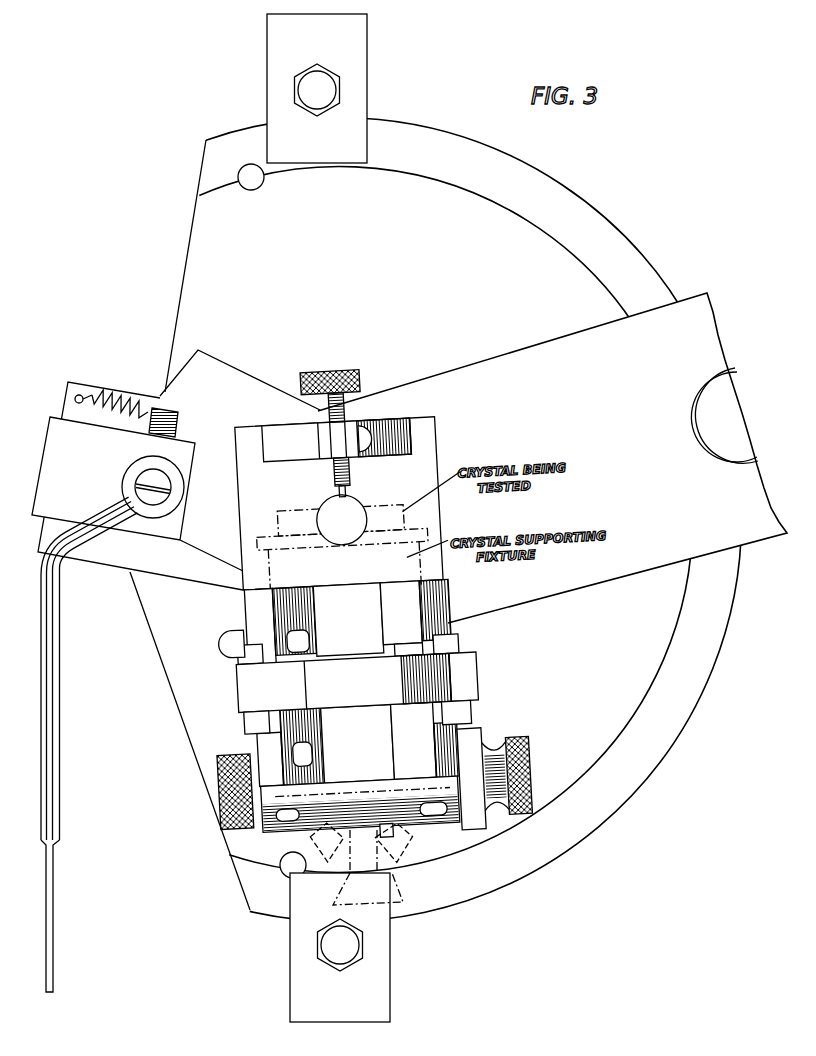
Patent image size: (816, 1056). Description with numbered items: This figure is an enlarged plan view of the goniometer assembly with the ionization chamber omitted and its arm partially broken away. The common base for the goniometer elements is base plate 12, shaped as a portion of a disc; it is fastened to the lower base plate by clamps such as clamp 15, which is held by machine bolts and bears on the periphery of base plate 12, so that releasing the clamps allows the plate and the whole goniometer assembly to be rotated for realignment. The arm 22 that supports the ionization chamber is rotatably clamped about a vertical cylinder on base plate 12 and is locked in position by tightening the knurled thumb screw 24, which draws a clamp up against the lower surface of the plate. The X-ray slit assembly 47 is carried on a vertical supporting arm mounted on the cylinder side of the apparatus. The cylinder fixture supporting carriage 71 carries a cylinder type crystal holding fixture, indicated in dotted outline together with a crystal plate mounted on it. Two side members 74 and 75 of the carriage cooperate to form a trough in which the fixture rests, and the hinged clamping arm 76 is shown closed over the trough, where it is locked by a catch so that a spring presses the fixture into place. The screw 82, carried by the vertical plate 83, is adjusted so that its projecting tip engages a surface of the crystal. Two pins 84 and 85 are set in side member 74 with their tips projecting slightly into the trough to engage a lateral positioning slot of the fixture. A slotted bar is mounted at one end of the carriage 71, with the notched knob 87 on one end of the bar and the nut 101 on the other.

The base plate 12 is at (575, 200).
The clamp 15 is at (360, 43).
The arm 22 is at (713, 303).
The knurled thumb screw 24 is at (738, 400).
The X-ray slit assembly 47 is at (48, 432).
The cylinder fixture supporting carriage 71 is at (433, 445).
The side member 74 is at (253, 603).
The side member 75 is at (387, 612).
The hinged clamping arm 76 is at (243, 683).
The screw 82 is at (354, 373).
The vertical plate 83 is at (277, 428).
The pin 84 is at (220, 632).
The pin 85 is at (235, 748).
The notched knob 87 is at (524, 762).
The nut 101 is at (218, 789).